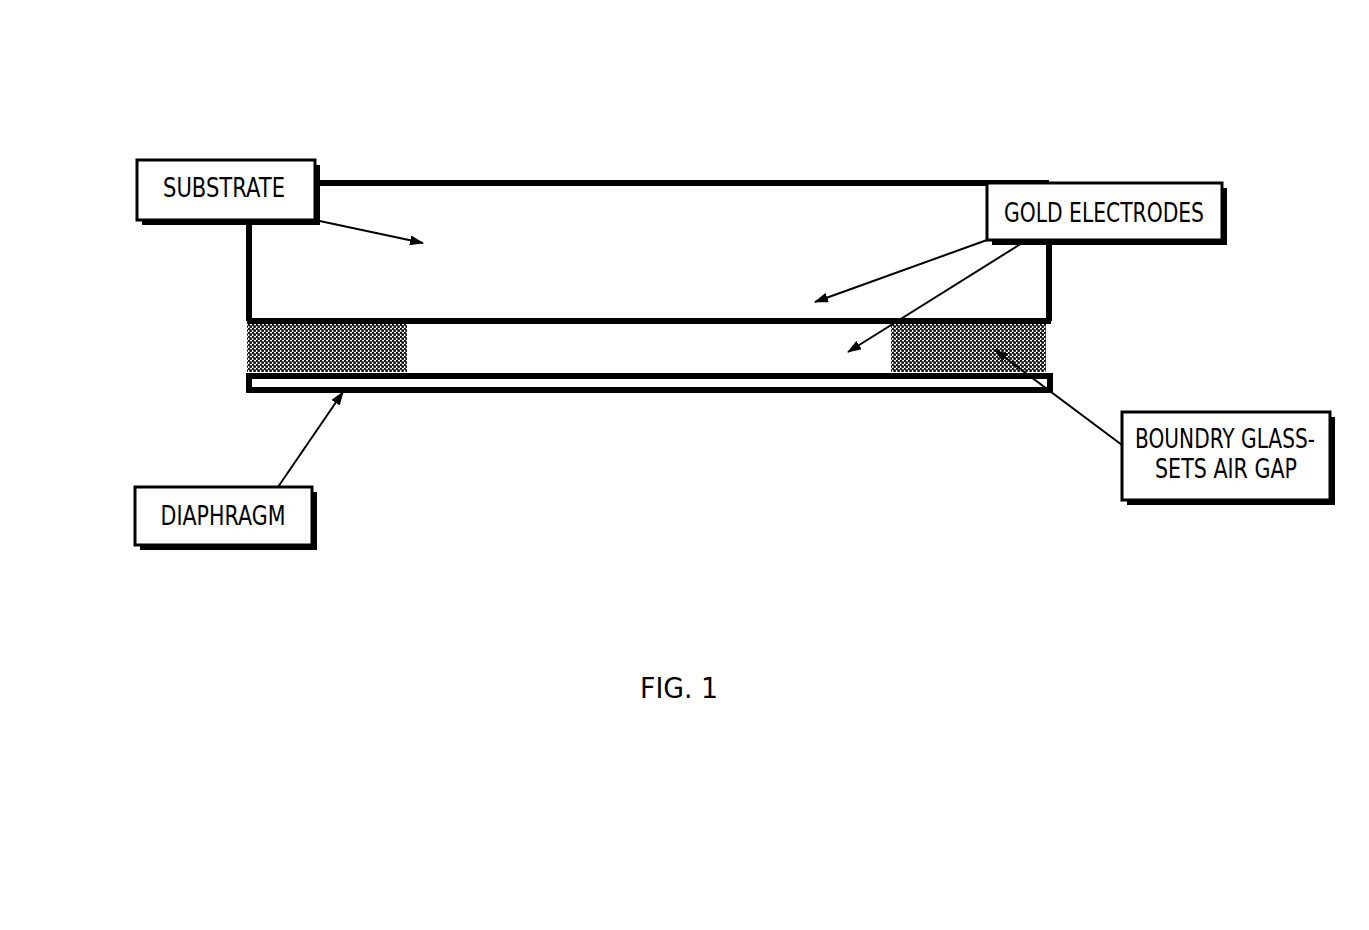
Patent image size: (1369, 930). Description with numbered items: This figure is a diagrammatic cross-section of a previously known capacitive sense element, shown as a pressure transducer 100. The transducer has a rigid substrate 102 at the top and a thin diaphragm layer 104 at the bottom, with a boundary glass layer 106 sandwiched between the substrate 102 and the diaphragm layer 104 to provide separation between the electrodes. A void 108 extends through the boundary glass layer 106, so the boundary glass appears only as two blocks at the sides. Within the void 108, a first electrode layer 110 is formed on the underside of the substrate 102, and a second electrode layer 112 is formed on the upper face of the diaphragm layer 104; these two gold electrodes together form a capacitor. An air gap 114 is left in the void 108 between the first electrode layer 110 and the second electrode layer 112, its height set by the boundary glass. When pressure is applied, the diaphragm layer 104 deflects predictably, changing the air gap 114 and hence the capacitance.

The pressure transducer 100 is at (1038, 100).
The substrate 102 is at (412, 192).
The diaphragm layer 104 is at (277, 392).
The boundary glass layer 106 is at (1040, 347).
The void 108 is at (658, 358).
The first electrode layer 110 is at (720, 318).
The second electrode layer 112 is at (437, 373).
The air gap 114 is at (775, 337).